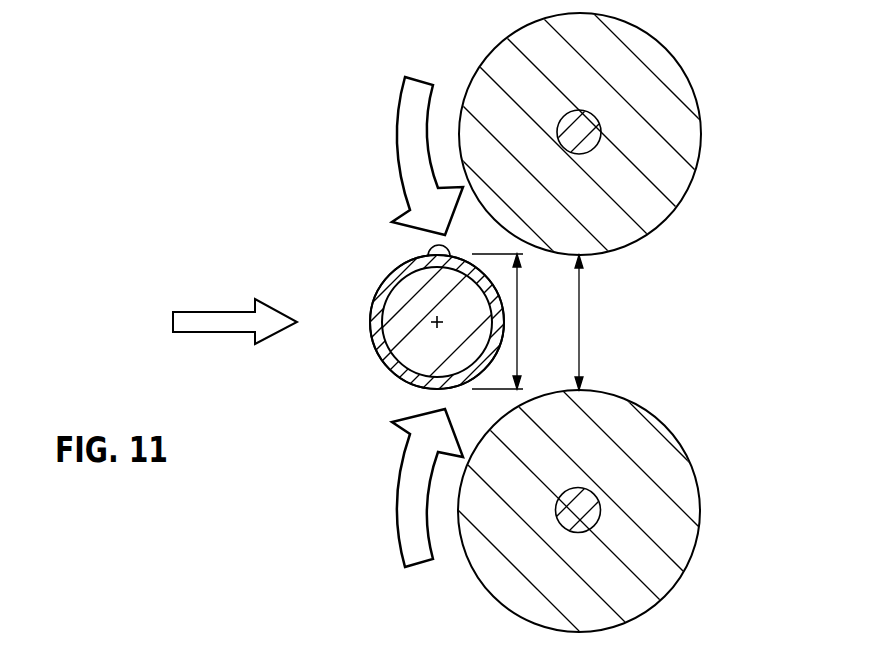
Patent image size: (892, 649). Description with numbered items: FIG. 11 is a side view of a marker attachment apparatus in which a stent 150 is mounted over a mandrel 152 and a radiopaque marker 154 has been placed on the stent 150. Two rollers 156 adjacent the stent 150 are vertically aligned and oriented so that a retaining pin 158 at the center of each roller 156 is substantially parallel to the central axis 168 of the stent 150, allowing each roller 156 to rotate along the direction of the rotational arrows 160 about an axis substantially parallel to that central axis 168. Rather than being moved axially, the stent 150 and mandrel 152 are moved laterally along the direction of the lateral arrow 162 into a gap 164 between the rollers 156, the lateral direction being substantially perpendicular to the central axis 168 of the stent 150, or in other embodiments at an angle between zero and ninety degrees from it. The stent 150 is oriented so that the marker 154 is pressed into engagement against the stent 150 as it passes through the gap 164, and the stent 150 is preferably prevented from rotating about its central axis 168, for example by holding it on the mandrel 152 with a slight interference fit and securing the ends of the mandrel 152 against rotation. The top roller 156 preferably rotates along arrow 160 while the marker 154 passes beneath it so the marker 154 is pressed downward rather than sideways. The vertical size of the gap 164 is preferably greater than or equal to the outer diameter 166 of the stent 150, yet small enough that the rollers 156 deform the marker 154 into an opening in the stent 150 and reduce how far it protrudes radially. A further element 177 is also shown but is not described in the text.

The stent 150 is at (410, 336).
The mandrel 152 is at (379, 366).
The radiopaque marker 154 is at (426, 255).
The roller 156 is at (698, 107).
The retaining pin 158 is at (600, 142).
The rotational arrow 160 is at (399, 111).
The lateral arrow 162 is at (209, 311).
The gap 164 is at (580, 293).
The outer diameter 166 is at (517, 348).
The central axis 168 is at (437, 321).
The sheet 177 is at (160, 648).